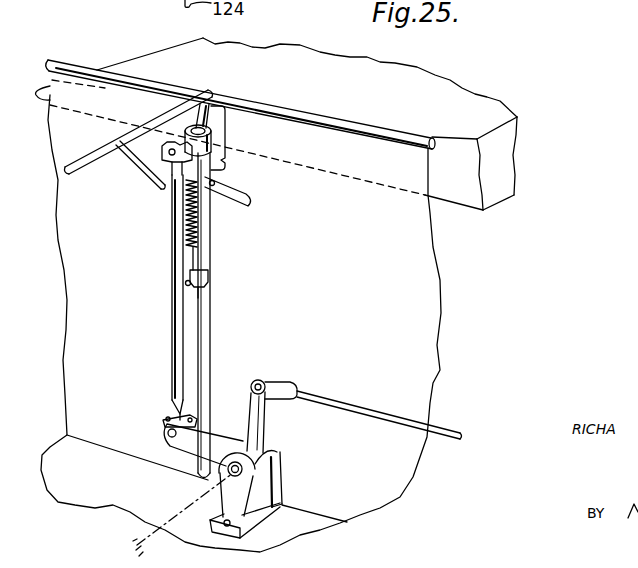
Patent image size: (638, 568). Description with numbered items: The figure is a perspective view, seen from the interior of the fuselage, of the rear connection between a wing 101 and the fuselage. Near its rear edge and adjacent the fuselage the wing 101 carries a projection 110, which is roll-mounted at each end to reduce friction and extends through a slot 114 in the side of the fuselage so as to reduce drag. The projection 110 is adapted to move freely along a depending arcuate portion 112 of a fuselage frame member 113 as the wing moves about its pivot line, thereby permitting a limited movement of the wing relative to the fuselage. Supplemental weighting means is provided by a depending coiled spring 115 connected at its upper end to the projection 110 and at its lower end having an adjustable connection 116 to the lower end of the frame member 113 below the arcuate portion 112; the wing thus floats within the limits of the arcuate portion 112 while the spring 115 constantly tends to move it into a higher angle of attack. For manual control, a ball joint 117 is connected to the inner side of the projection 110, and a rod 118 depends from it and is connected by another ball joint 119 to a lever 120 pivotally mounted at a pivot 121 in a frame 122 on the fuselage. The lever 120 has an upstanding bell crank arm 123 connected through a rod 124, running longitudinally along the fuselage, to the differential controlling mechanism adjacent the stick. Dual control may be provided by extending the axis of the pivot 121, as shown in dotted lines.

The wing 101 is at (193, 48).
The projection 110 is at (215, 126).
The depending arcuate portion 112 is at (209, 107).
The fuselage frame member 113 is at (143, 123).
The slot 114 is at (225, 168).
The coiled spring 115 is at (210, 222).
The adjustable connection 116 is at (209, 280).
The ball joint 117 is at (163, 183).
The rod 118 is at (172, 275).
The ball joint 119 is at (172, 412).
The lever 120 is at (190, 442).
The pivot 121 is at (253, 513).
The frame 122 is at (276, 486).
The bell crank arm 123 is at (257, 418).
The rod 124 is at (358, 410).